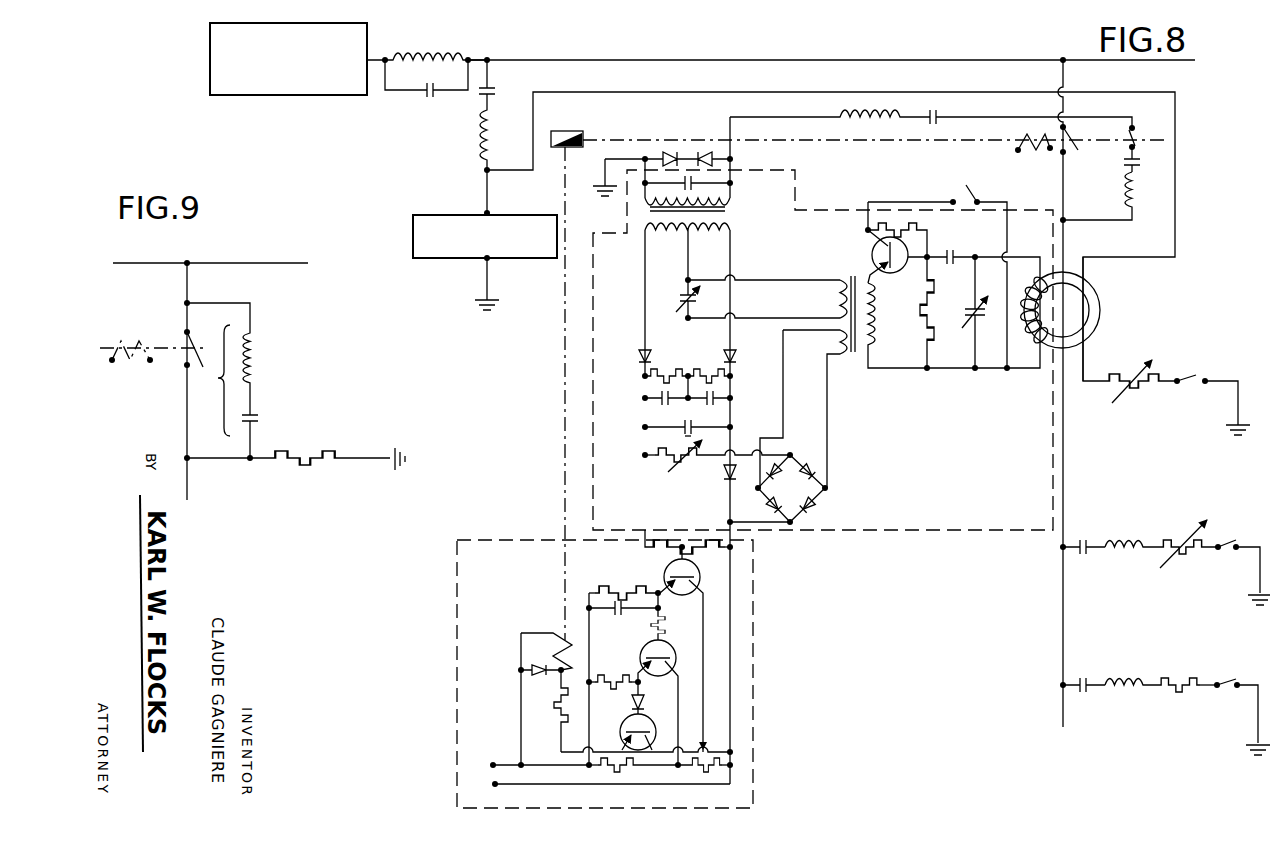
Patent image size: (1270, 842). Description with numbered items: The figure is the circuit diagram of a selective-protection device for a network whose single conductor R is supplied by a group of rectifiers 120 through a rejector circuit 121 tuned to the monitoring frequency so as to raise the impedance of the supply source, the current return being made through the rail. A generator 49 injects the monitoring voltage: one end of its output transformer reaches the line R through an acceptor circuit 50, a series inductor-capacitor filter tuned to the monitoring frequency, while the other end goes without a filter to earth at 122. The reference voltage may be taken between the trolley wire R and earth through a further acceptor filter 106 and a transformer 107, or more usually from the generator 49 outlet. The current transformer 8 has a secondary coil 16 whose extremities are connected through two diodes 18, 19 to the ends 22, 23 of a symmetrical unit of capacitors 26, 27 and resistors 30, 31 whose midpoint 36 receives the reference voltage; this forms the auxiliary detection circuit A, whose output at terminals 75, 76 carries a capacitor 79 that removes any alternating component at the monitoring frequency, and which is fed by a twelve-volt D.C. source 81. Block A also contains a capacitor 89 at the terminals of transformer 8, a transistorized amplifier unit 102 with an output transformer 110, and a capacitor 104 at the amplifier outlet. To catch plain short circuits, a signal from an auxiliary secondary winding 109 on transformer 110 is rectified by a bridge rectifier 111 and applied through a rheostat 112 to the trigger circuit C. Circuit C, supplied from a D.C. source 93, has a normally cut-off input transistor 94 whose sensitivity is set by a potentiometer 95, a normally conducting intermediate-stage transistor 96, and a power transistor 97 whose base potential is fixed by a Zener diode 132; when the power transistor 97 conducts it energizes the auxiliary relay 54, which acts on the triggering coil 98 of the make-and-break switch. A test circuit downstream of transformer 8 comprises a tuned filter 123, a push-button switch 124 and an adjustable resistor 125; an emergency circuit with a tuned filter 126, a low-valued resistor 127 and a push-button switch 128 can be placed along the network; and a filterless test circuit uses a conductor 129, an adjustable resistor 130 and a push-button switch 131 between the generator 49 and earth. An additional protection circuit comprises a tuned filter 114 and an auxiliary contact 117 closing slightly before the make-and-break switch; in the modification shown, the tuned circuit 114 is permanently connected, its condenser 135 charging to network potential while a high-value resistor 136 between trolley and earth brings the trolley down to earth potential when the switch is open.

In FIG. 8, the group of rectifiers 120 is at (210, 37).
In FIG. 8, the rejector circuit 121 is at (436, 58).
In FIG. 8, the acceptor circuit 50 is at (492, 137).
In FIG. 8, the generator 49 is at (433, 214).
In FIG. 8, the earth connection 122 is at (490, 290).
In FIG. 8, the transformer 107 is at (734, 208).
In FIG. 8, the capacitor 104 is at (681, 297).
In FIG. 8, the output transformer 110 is at (836, 300).
In FIG. 8, the auxiliary secondary winding 109 is at (836, 349).
In FIG. 8, the diode 18 is at (642, 349).
In FIG. 8, the diode 19 is at (733, 352).
In FIG. 8, the end of capacitor-resistor unit 22 is at (641, 376).
In FIG. 8, the end of capacitor-resistor unit 23 is at (733, 376).
In FIG. 8, the resistor 30 is at (655, 370).
In FIG. 8, the midpoint of capacitor-resistor unit 36 is at (692, 370).
In FIG. 8, the resistor 31 is at (729, 380).
In FIG. 8, the capacitor 26 is at (660, 406).
In FIG. 8, the capacitor 27 is at (715, 406).
In FIG. 8, the outlet terminal 75 is at (641, 428).
In FIG. 8, the outlet terminal 76 is at (733, 428).
In FIG. 8, the capacitor 79 is at (686, 438).
In FIG. 8, the rheostat 112 is at (690, 463).
In FIG. 8, the bridge rectifier 111 is at (812, 497).
In FIG. 8, the filter 106 is at (931, 125).
In FIG. 8, the triggering coil 98 is at (1031, 155).
In FIG. 9, the triggering coil 98 is at (152, 330).
In FIG. 8, the auxiliary contact 117 is at (1137, 141).
In FIG. 8, the filter 114 is at (1126, 187).
In FIG. 9, the filter 114 is at (222, 380).
In FIG. 8, the D.C. source 81 is at (975, 196).
In FIG. 8, the transistorized amplifier unit 102 is at (907, 273).
In FIG. 8, the capacitor 89 is at (966, 308).
In FIG. 8, the coil 16 is at (1036, 294).
In FIG. 8, the current transformer 8 is at (1097, 310).
In FIG. 8, the conductor 129 is at (1083, 366).
In FIG. 8, the adjustable resistor 130 is at (1146, 385).
In FIG. 8, the push-button switch 131 is at (1200, 374).
In FIG. 8, the filter 123 is at (1122, 556).
In FIG. 8, the push-button switch 124 is at (1232, 540).
In FIG. 8, the adjustable resistor 125 is at (1190, 556).
In FIG. 8, the filter 126 is at (1126, 695).
In FIG. 8, the low-valued resistor 127 is at (1183, 692).
In FIG. 8, the push-button switch 128 is at (1218, 675).
In FIG. 8, the input transistor 94 is at (665, 573).
In FIG. 8, the intermediate-stage transistor 96 is at (644, 651).
In FIG. 8, the power transistor 97 is at (654, 722).
In FIG. 8, the Zener diode 132 is at (632, 703).
In FIG. 8, the auxiliary relay 54 is at (546, 632).
In FIG. 8, the D.C. source 93 is at (490, 778).
In FIG. 8, the potentiometer 95 is at (712, 769).
In FIG. 9, the condenser 135 is at (262, 423).
In FIG. 9, the high-value resistor 136 is at (295, 465).
In FIG. 8, the auxiliary detection circuit A is at (944, 508).
In FIG. 8, the trigger circuit C is at (745, 596).
In FIG. 8, the single conductor R is at (793, 60).
In FIG. 9, the single conductor R is at (262, 262).